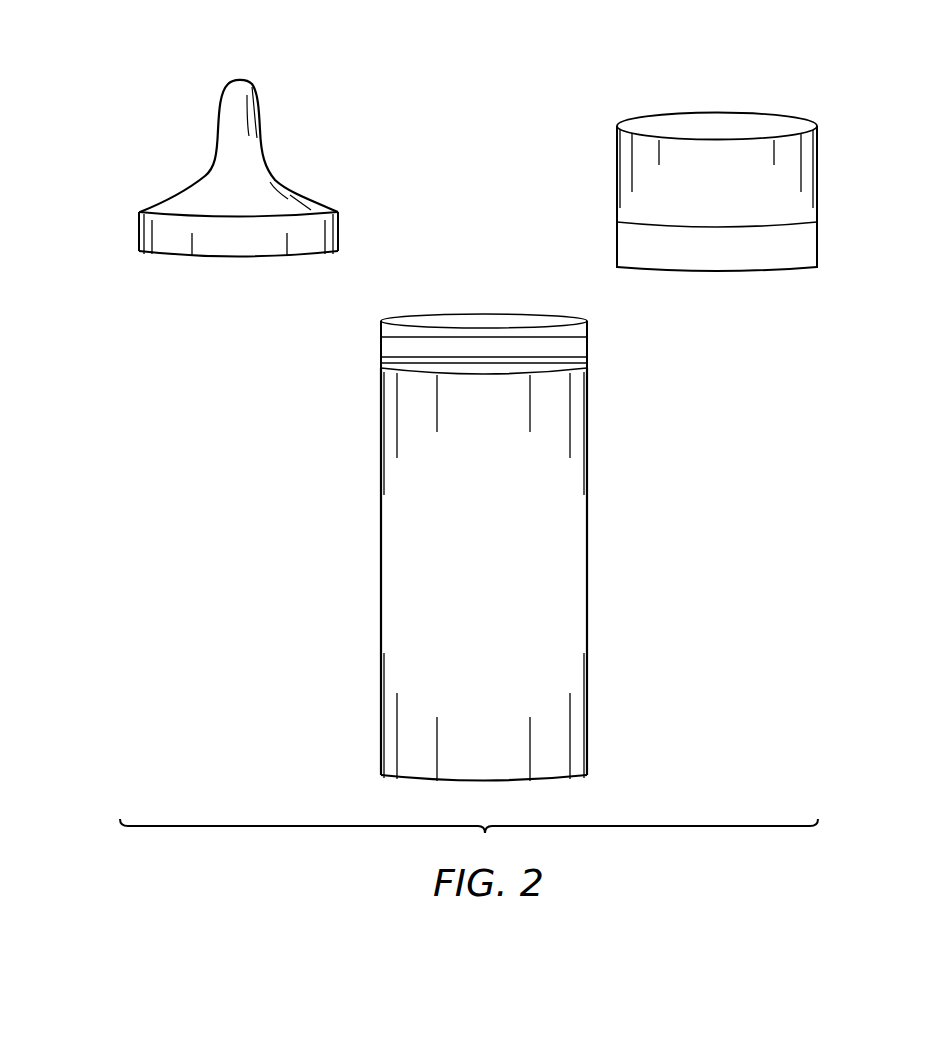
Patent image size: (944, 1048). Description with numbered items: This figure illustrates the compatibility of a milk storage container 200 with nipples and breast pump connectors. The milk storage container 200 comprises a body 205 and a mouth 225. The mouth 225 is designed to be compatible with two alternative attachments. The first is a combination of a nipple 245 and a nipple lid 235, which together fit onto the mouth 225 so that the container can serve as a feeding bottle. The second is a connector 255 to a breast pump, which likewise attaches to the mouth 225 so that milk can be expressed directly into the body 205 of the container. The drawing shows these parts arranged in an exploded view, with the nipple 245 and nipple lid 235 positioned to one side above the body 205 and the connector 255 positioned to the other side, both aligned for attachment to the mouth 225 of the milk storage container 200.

The milk storage container 200 is at (256, 494).
The body 205 is at (518, 488).
The mouth 225 is at (485, 327).
The nipple lid 235 is at (154, 235).
The nipple 245 is at (237, 165).
The connector 255 is at (718, 123).